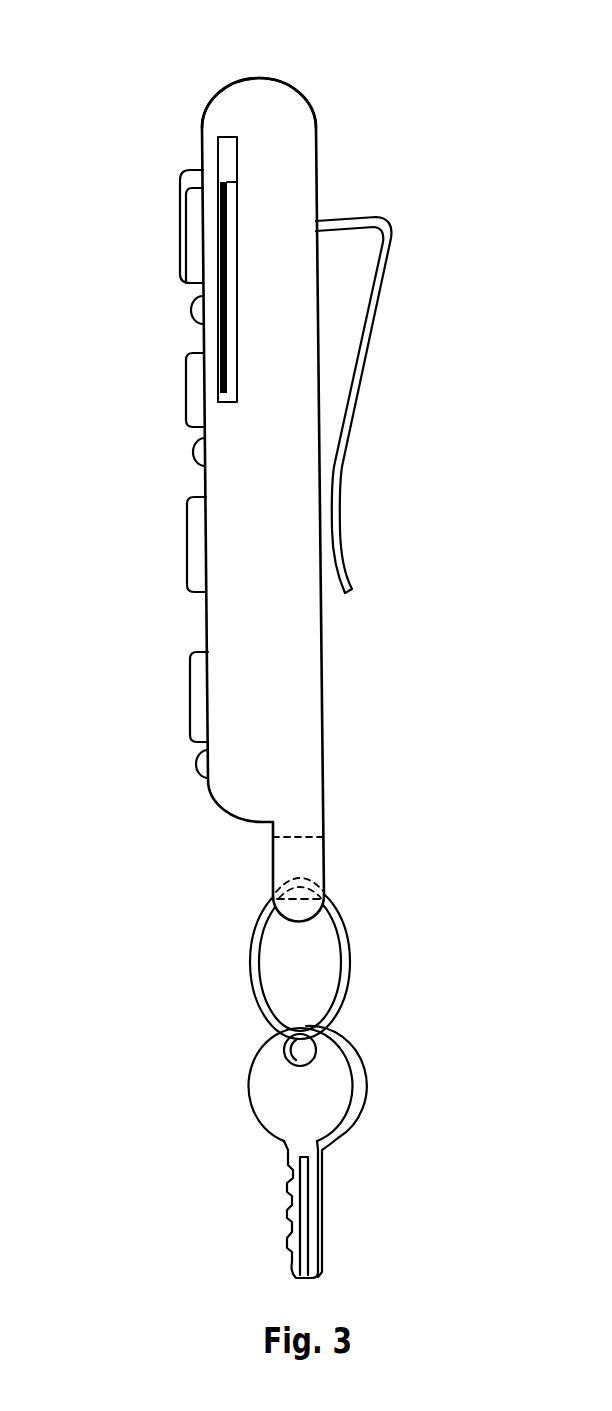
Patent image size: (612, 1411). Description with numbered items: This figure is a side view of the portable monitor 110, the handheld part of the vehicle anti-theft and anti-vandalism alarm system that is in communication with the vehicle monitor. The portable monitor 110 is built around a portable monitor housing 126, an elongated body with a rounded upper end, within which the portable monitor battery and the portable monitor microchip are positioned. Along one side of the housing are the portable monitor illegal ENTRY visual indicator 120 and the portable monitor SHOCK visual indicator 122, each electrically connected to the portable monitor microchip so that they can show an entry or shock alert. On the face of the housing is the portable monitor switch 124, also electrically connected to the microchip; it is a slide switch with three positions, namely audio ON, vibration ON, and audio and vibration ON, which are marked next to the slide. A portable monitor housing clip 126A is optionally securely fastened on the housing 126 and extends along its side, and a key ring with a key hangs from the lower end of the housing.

The portable monitor 110 is at (313, 108).
The portable monitor illegal ENTRY visual indicator 120 is at (180, 180).
The portable monitor SHOCK visual indicator 122 is at (177, 261).
The portable monitor switch 124 is at (226, 160).
The portable monitor housing 126 is at (262, 75).
The portable monitor housing clip 126A is at (392, 222).